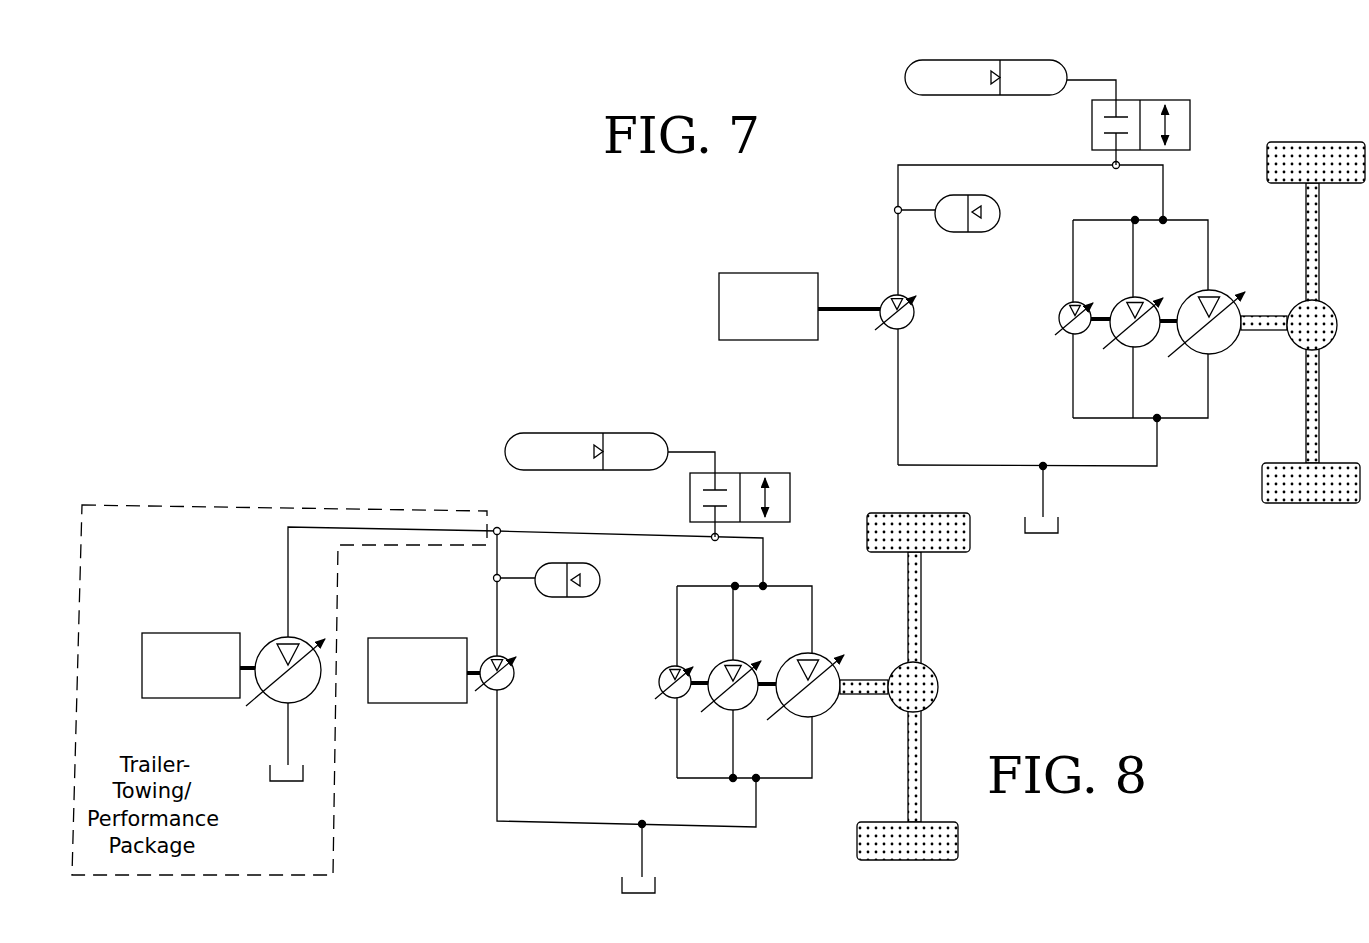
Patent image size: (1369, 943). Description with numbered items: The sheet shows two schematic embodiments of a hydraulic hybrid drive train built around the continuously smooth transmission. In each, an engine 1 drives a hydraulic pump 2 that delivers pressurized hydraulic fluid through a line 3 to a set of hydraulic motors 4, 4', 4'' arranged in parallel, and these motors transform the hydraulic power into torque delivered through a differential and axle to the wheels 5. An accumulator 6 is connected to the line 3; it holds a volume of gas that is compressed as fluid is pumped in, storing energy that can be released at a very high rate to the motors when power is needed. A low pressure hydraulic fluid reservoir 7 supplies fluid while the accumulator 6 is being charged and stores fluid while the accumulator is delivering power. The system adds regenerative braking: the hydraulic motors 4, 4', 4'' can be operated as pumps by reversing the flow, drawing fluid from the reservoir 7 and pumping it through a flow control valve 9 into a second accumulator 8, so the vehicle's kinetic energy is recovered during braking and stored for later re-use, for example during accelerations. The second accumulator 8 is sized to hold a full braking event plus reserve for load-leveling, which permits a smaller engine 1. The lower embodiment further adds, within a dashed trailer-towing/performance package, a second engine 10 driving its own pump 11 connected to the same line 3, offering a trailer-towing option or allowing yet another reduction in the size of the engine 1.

In FIG. 7, the engine 1 is at (741, 273).
In FIG. 8, the engine 1 is at (428, 703).
In FIG. 7, the hydraulic pump 2 is at (890, 332).
In FIG. 8, the hydraulic pump 2 is at (504, 700).
In FIG. 7, the line 3 is at (898, 186).
In FIG. 8, the line 3 is at (497, 566).
In FIG. 7, the hydraulic motor 4 is at (1189, 319).
In FIG. 8, the hydraulic motor 4 is at (788, 682).
In FIG. 7, the hydraulic motor 4' is at (1125, 319).
In FIG. 8, the hydraulic motor 4' is at (723, 682).
In FIG. 7, the hydraulic motor 4'' is at (1071, 319).
In FIG. 8, the hydraulic motor 4'' is at (671, 682).
In FIG. 7, the wheels 5 is at (1293, 503).
In FIG. 8, the wheels 5 is at (925, 843).
In FIG. 7, the accumulator 6 is at (1000, 214).
In FIG. 8, the accumulator 6 is at (600, 576).
In FIG. 7, the low pressure hydraulic fluid reservoir 7 is at (1058, 527).
In FIG. 8, the low pressure hydraulic fluid reservoir 7 is at (620, 877).
In FIG. 7, the second accumulator 8 is at (905, 72).
In FIG. 8, the second accumulator 8 is at (598, 433).
In FIG. 7, the flow control valve 9 is at (1160, 100).
In FIG. 8, the flow control valve 9 is at (742, 473).
In FIG. 8, the second engine 10 is at (192, 633).
In FIG. 8, the pump 11 is at (272, 706).